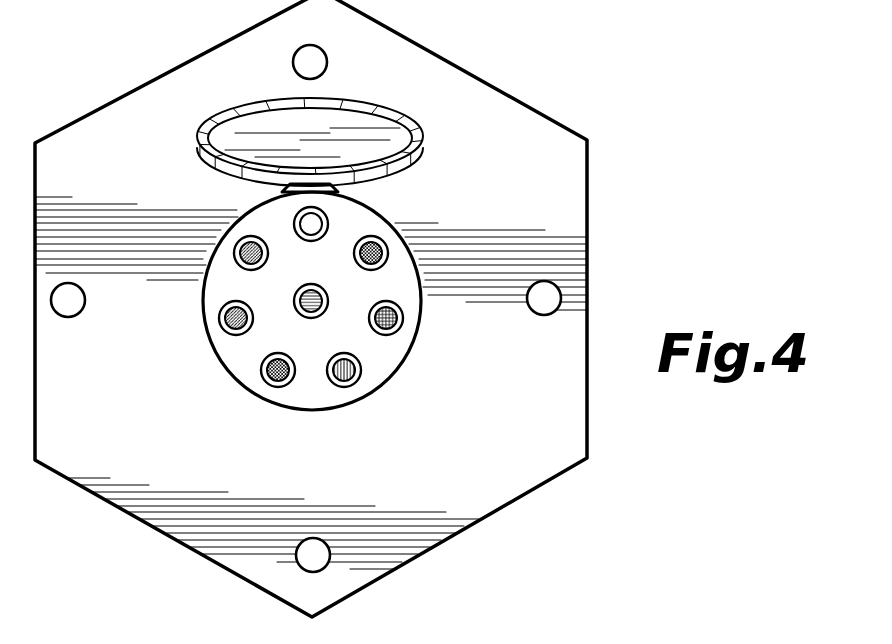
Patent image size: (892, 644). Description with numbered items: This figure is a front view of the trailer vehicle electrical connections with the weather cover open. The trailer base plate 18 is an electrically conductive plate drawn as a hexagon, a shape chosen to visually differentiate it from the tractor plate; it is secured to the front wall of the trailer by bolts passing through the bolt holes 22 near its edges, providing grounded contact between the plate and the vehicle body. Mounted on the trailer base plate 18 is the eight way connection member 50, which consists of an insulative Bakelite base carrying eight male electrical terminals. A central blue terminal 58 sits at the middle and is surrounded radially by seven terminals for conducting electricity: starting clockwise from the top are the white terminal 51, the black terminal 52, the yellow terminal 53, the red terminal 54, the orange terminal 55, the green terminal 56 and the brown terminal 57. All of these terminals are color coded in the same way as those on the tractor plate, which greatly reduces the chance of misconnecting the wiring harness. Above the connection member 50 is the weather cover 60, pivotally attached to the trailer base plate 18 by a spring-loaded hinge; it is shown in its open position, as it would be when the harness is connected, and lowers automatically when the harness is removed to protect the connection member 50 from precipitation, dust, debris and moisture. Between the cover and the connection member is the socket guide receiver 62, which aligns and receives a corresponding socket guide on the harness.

The trailer base plate 18 is at (464, 87).
The bolt holes 22 is at (291, 60).
The eight way connection member 50 is at (316, 400).
The white terminal 51 is at (299, 214).
The black terminal 52 is at (383, 239).
The yellow terminal 53 is at (397, 317).
The red terminal 54 is at (365, 377).
The orange terminal 55 is at (270, 380).
The green terminal 56 is at (223, 332).
The brown terminal 57 is at (233, 260).
The central blue terminal 58 is at (322, 288).
The weather cover 60 is at (413, 130).
The socket guide receiver 62 is at (303, 183).